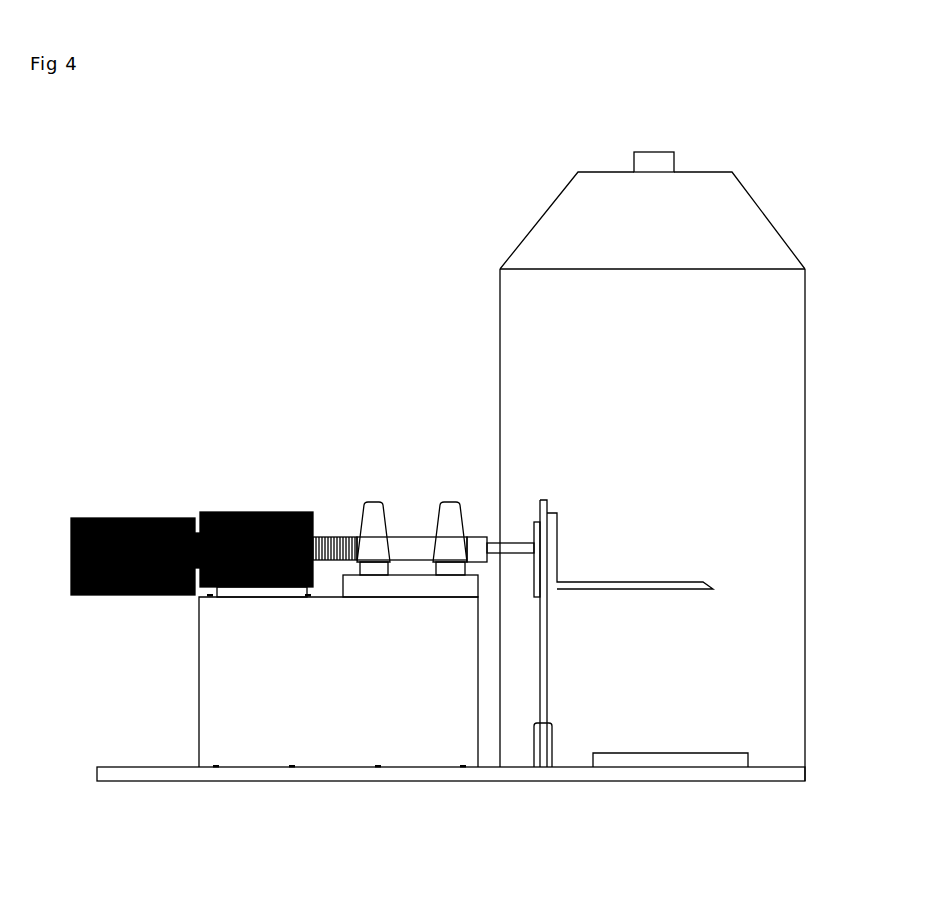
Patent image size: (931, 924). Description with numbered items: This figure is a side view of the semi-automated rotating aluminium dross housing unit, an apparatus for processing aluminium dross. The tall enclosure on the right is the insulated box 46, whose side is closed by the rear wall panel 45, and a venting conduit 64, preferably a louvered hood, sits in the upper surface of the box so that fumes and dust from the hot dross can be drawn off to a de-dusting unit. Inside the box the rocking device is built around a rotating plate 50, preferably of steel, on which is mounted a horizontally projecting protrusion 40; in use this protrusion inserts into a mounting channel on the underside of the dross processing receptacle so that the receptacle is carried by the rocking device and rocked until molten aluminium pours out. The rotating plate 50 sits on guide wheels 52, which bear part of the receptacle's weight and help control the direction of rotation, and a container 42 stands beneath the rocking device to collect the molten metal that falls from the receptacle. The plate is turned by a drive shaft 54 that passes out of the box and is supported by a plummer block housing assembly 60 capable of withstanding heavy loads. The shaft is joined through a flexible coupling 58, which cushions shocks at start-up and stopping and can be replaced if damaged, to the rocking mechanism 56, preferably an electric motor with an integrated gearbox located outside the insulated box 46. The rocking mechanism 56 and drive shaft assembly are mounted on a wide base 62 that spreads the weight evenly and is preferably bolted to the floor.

The horizontally projecting protrusion 40 is at (560, 547).
The container 42 is at (645, 762).
The rear wall panel 45 is at (497, 350).
The insulated box 46 is at (518, 232).
The rotating plate 50 is at (552, 664).
The guide wheels 52 is at (553, 743).
The drive shaft 54 is at (488, 531).
The rocking mechanism 56 is at (208, 508).
The flexible coupling 58 is at (330, 534).
The plummer block housing assembly 60 is at (387, 492).
The base 62 is at (212, 675).
The venting conduit 64 is at (653, 160).